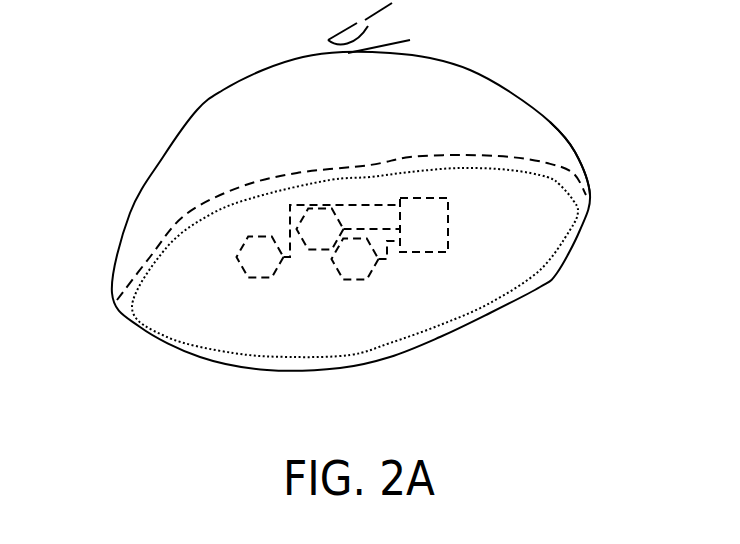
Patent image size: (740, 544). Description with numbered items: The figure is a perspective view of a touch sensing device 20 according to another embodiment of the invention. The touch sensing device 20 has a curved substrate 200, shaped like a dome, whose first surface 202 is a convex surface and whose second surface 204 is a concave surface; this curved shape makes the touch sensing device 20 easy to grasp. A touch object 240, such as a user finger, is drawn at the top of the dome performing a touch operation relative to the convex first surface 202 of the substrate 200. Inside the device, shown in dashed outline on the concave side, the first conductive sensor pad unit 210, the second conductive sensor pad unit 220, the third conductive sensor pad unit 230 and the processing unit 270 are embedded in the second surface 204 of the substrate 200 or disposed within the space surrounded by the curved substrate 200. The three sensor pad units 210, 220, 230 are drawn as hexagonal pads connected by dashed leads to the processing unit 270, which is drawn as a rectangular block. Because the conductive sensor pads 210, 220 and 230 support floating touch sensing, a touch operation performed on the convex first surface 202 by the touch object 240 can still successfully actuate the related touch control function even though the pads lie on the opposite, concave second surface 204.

The touch sensing device 20 is at (622, 352).
The curved substrate 200 is at (250, 120).
The first surface 202 is at (575, 154).
The second surface 204 is at (562, 200).
The first conductive sensor pad unit 210 is at (254, 279).
The second conductive sensor pad unit 220 is at (320, 250).
The third conductive sensor pad unit 230 is at (367, 280).
The touch object 240 is at (365, 12).
The processing unit 270 is at (448, 236).